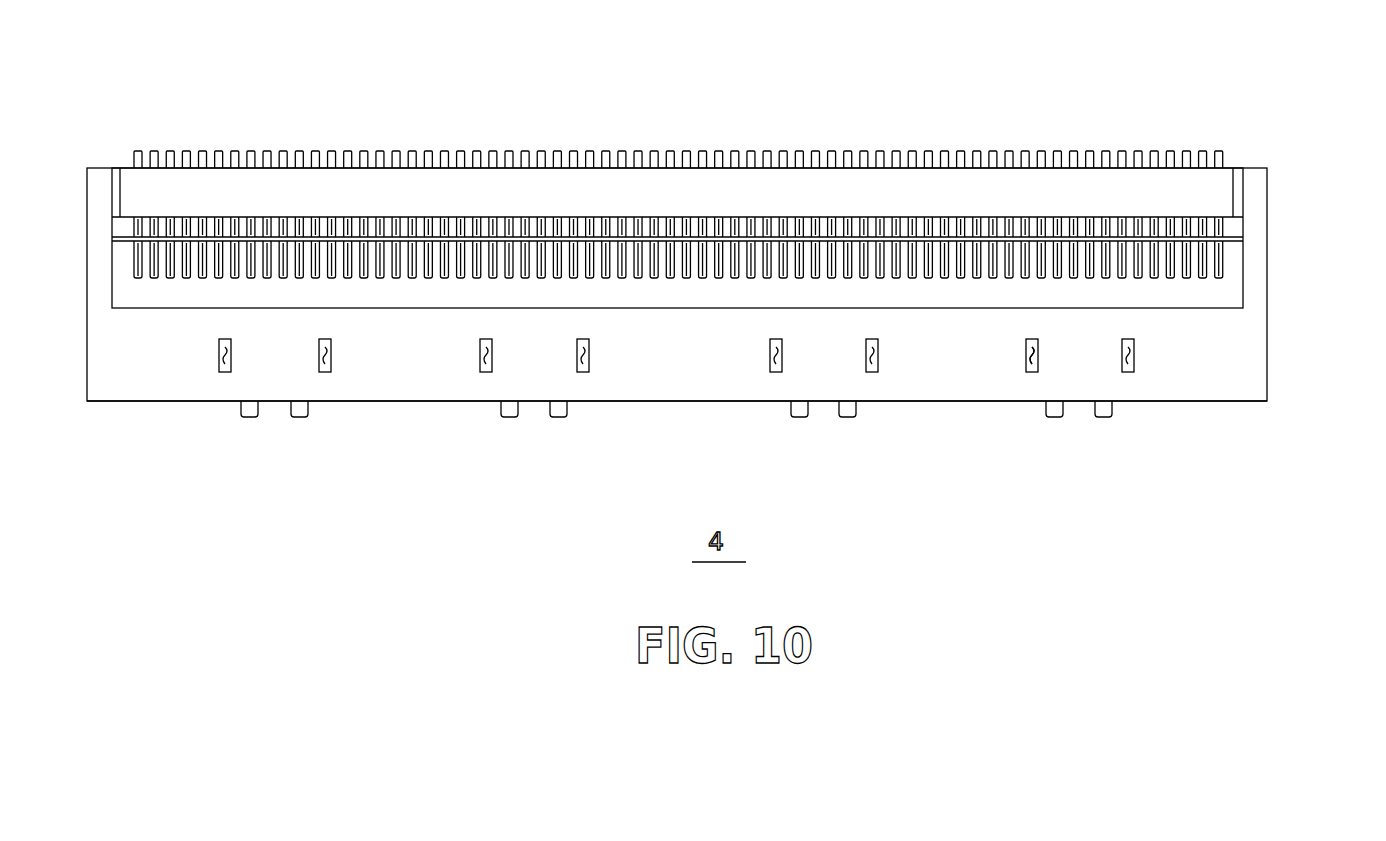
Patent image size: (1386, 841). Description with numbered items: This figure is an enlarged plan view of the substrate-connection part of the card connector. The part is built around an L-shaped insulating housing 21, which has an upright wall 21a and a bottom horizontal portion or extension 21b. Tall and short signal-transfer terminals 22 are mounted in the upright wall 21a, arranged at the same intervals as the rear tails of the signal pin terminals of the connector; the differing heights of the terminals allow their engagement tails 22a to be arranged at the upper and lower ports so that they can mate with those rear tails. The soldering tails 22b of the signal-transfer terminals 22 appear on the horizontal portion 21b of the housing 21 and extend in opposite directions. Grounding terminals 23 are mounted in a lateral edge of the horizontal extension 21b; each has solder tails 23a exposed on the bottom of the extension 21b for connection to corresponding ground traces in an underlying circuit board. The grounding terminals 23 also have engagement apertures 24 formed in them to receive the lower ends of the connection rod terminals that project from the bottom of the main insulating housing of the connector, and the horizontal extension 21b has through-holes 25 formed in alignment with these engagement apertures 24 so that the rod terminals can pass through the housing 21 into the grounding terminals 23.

The L-shaped insulating housing 21 is at (1242, 325).
The upright wall 21a is at (742, 195).
The horizontal portion 21b is at (425, 385).
The signal-transfer terminals 22 is at (1172, 163).
The engagement tails 22a is at (980, 217).
The soldering tails 22b is at (1118, 153).
The grounding terminals 23 is at (1052, 418).
The solder tails 23a is at (1104, 418).
The engagement apertures 24 is at (1030, 370).
The through-holes 25 is at (1027, 358).